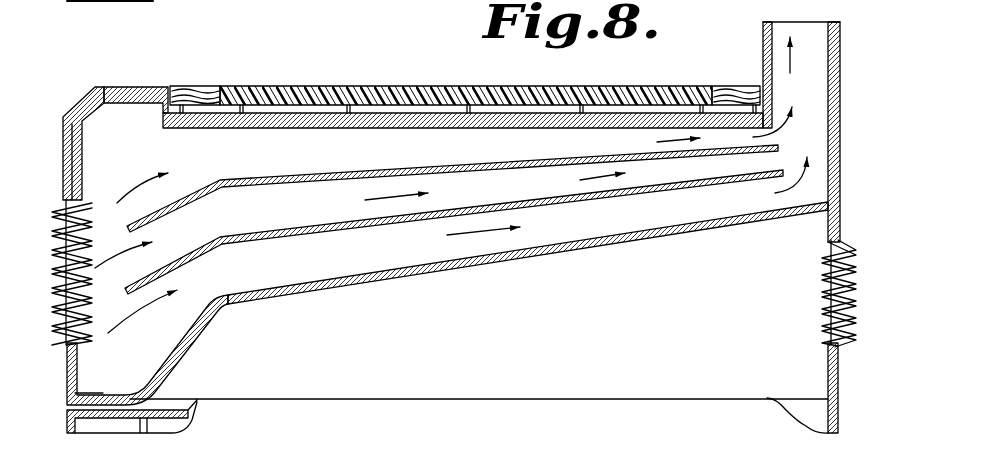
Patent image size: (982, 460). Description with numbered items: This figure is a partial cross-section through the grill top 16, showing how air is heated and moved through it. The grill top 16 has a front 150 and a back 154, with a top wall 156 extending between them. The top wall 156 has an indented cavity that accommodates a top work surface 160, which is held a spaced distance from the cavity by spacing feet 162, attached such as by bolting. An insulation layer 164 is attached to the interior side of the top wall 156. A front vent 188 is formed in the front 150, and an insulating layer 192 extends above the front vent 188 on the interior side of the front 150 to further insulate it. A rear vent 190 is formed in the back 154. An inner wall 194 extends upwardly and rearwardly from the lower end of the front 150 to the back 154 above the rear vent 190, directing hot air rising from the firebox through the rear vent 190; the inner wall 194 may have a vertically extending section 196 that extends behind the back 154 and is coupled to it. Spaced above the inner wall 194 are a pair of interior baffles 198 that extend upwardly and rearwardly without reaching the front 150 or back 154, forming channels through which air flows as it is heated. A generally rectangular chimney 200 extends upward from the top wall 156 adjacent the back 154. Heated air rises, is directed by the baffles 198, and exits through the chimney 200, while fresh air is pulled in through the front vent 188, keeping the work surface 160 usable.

The grill top 16 is at (75, 103).
The front 150 is at (60, 188).
The back 154 is at (838, 217).
The top wall 156 is at (135, 87).
The top work surface 160 is at (402, 86).
The spacing feet 162 is at (241, 106).
The insulation layer 164 is at (237, 131).
The front vent 188 is at (88, 334).
The rear vent 190 is at (850, 330).
The insulating layer 192 is at (82, 154).
The inner wall 194 is at (192, 331).
The vertically extending section 196 is at (841, 84).
The interior baffles 198 is at (296, 186).
The chimney 200 is at (763, 41).